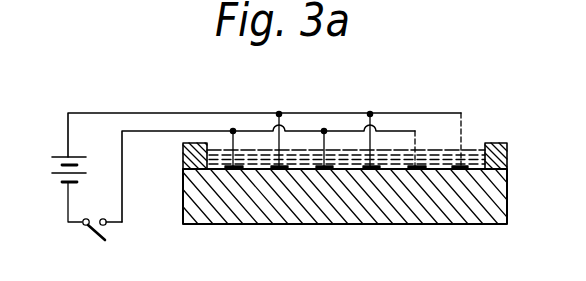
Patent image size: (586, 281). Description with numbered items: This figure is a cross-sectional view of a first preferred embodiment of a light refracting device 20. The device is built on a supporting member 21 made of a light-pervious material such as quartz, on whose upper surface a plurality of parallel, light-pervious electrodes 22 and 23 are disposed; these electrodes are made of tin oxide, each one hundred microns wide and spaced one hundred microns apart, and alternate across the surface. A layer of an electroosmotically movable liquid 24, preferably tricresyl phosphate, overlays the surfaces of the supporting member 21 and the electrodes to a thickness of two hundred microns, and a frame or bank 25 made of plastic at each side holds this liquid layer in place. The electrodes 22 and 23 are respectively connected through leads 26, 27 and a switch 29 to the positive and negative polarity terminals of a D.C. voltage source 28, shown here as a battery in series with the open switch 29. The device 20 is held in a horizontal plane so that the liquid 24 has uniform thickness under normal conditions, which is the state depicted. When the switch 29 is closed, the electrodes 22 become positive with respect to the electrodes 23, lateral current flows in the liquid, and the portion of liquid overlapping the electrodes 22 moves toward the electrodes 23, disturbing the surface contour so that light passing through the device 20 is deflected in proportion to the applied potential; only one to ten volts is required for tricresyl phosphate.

The light refracting device 20 is at (413, 257).
The supporting member 21 is at (508, 205).
The electrodes 22 is at (467, 163).
The electrodes 23 is at (422, 165).
The electroosmotically movable liquid 24 is at (251, 150).
The frame or bank 25 is at (508, 150).
The lead 26 is at (114, 113).
The lead 27 is at (157, 133).
The D.C. voltage source 28 is at (52, 184).
The switch 29 is at (88, 233).